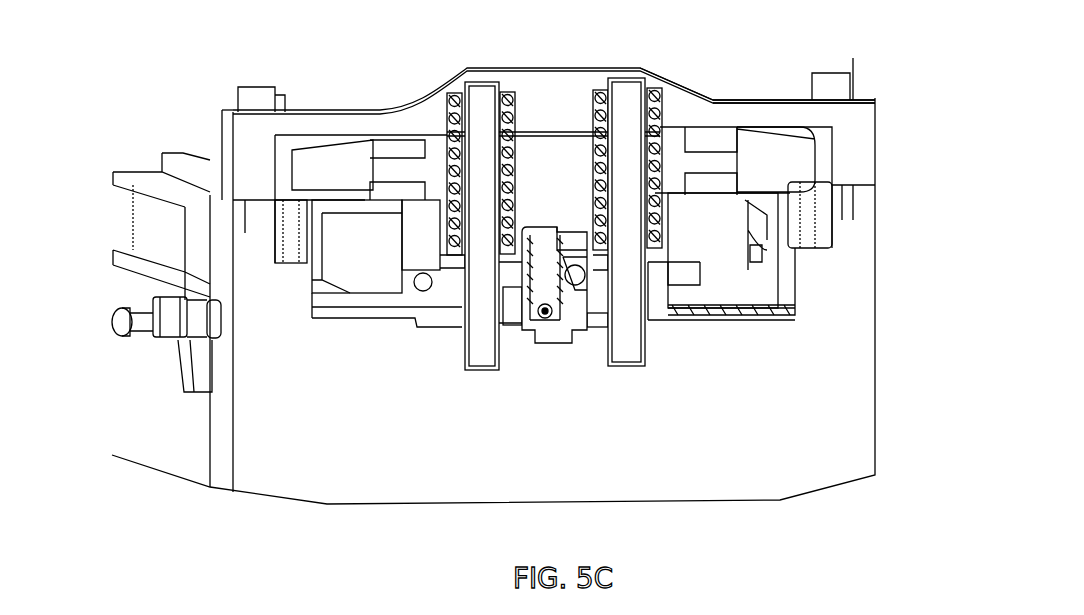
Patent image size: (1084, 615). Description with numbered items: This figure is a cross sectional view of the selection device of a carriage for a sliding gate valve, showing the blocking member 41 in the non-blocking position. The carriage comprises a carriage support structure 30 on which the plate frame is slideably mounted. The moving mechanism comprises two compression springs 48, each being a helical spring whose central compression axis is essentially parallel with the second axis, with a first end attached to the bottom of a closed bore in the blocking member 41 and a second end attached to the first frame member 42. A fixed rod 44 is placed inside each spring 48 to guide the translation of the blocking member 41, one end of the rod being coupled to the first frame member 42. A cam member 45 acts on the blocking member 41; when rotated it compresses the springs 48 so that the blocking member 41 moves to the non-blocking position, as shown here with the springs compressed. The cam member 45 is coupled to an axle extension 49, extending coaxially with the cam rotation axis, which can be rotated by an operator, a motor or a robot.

The carriage support structure 30 is at (877, 357).
The blocking member 41 is at (547, 173).
The first frame member 42 is at (750, 110).
The fixed rod 44 is at (483, 117).
The cam member 45 is at (545, 280).
The compression spring 48 is at (453, 103).
The axle extension 49 is at (130, 306).